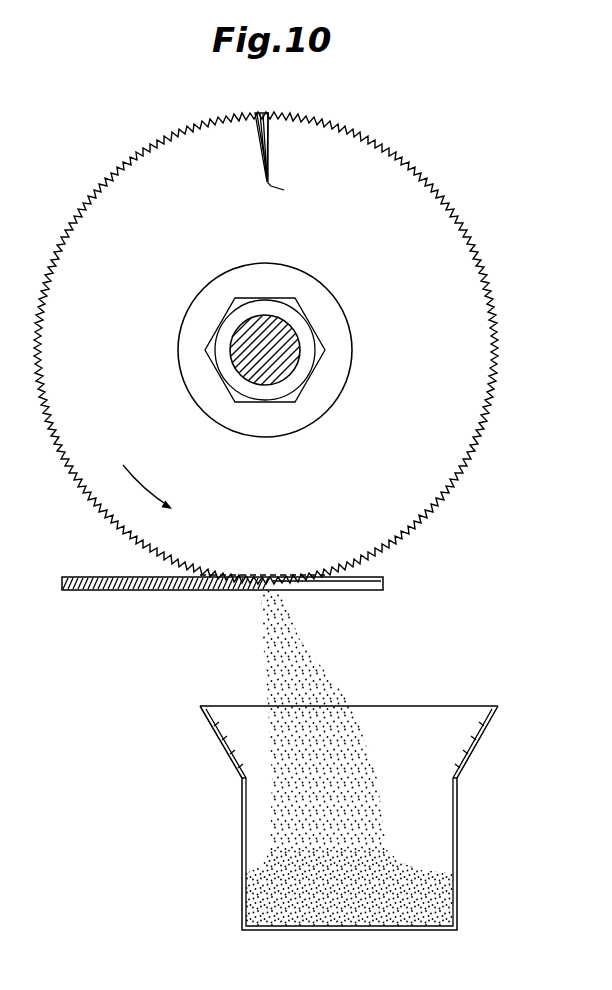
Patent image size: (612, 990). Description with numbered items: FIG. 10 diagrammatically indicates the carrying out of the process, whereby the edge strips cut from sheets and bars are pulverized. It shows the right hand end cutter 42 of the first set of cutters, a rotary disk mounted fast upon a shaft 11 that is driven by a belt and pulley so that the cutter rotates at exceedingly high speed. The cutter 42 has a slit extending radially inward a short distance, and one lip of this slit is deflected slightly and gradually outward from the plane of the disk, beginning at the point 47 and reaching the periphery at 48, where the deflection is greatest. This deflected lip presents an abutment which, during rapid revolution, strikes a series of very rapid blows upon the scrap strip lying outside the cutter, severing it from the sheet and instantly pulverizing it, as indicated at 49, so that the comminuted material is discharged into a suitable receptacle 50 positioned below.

The shaft 11 is at (268, 322).
The right hand end cutter 42 is at (470, 336).
The point of deflection 47 is at (288, 157).
The periphery point of greatest deflection 48 is at (268, 112).
The pulverized scrap 49 is at (325, 658).
The receptacle 50 is at (468, 756).